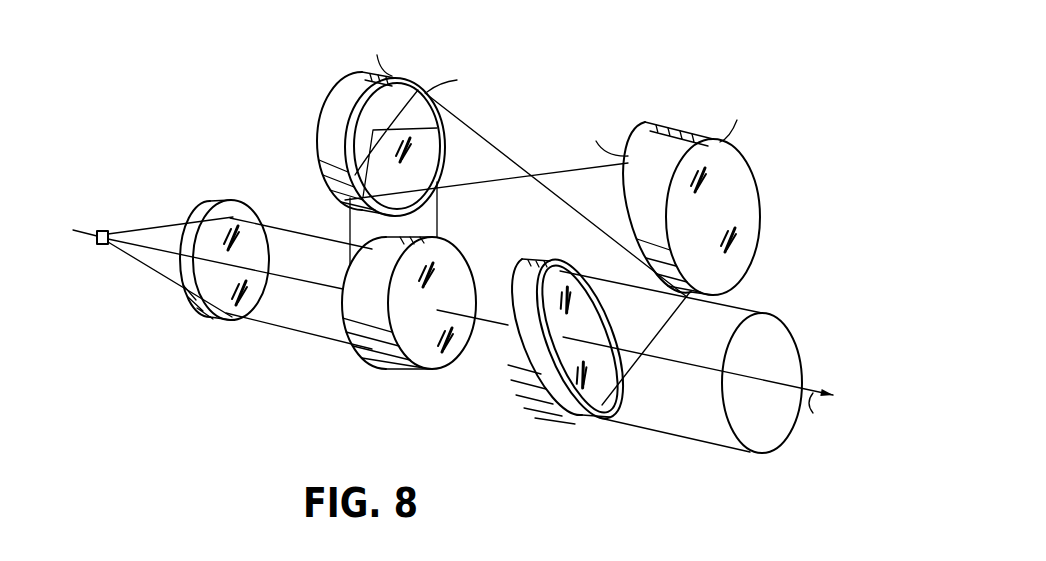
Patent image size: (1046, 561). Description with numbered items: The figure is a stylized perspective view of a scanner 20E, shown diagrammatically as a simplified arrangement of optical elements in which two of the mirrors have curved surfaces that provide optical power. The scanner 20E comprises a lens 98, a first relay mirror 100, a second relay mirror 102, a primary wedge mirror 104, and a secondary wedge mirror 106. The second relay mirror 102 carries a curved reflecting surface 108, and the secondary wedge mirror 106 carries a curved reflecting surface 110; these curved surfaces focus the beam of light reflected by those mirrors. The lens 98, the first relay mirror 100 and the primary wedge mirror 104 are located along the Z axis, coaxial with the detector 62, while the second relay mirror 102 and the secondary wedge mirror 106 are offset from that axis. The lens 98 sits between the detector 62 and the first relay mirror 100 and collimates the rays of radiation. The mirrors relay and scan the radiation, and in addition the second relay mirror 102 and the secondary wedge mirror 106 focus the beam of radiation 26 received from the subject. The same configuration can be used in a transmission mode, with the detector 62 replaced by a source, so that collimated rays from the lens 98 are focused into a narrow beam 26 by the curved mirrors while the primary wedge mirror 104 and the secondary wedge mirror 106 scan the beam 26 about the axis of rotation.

The scanner 20E is at (258, 145).
The detector 62 is at (105, 247).
The lens 98 is at (181, 297).
The first relay mirror 100 is at (427, 370).
The second relay mirror 102 is at (322, 108).
The primary wedge mirror 104 is at (550, 417).
The secondary wedge mirror 106 is at (760, 223).
The curved reflecting surface 108 is at (417, 88).
The curved reflecting surface 110 is at (637, 128).
The beam of radiation 26 is at (663, 430).